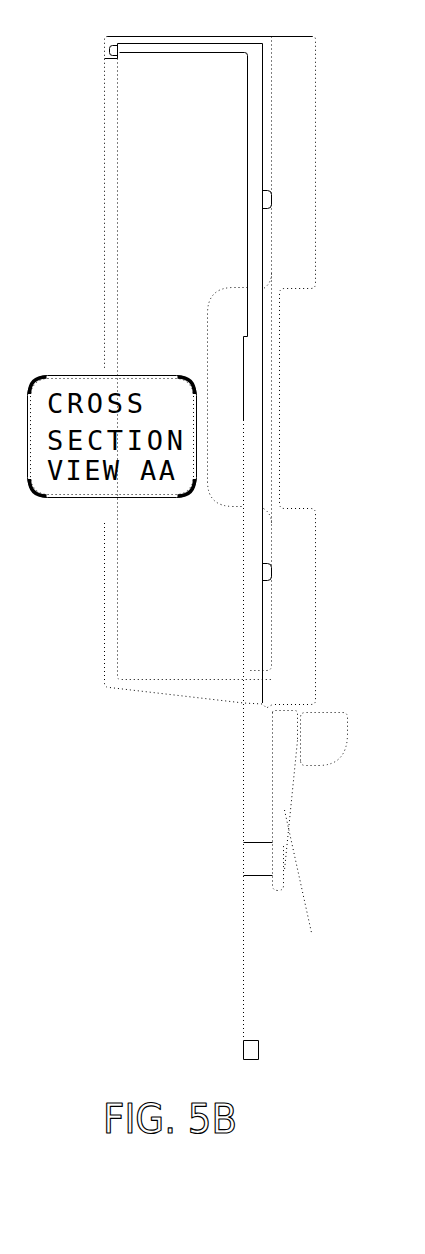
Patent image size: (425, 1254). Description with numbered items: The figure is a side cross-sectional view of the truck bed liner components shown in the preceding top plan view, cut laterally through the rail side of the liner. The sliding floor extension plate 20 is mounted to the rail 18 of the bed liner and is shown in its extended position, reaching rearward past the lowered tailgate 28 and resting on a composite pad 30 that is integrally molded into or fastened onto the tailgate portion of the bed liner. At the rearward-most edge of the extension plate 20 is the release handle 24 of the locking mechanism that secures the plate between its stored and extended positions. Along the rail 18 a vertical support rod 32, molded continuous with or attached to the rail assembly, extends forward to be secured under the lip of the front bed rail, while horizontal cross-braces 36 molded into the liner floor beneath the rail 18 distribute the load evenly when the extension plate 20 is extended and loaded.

The support rod 32 is at (190, 48).
The cross-brace 36 is at (267, 200).
The rail 18 is at (255, 242).
The composite pad 30 is at (265, 855).
The sliding floor extension plate 20 is at (245, 942).
The release handle 24 is at (247, 1040).
The tailgate 28 is at (306, 849).